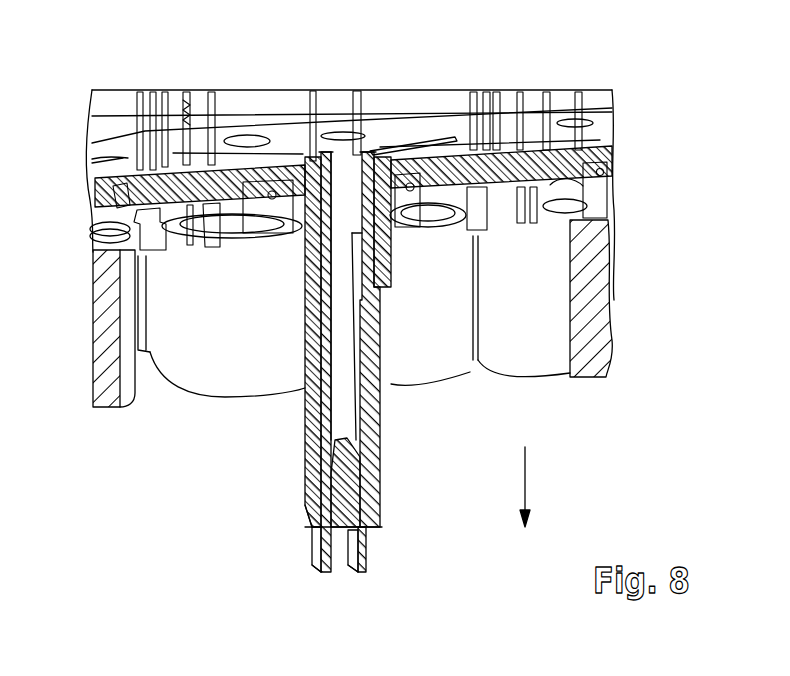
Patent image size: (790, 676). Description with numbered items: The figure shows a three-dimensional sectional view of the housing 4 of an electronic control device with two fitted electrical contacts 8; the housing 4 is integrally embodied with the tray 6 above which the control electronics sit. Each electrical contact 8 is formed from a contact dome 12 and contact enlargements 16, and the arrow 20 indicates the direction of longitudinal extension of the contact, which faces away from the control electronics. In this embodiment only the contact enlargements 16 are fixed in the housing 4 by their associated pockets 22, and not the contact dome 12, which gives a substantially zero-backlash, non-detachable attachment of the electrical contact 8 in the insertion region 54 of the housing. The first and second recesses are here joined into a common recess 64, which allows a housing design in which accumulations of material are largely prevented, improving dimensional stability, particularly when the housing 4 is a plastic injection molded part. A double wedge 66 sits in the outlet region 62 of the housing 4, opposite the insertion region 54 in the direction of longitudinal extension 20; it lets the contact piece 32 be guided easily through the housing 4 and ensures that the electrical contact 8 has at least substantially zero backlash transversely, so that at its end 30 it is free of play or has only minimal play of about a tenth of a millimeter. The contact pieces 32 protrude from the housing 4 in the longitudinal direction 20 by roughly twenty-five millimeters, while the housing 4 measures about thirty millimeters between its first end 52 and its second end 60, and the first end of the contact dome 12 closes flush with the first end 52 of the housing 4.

The housing 4 is at (377, 402).
The tray 6 is at (604, 150).
The electrical contact 8 is at (327, 586).
The contact dome 12 is at (357, 285).
The contact enlargement 16 is at (332, 160).
The arrow 20 is at (525, 480).
The pocket 22 is at (292, 163).
The end 30 is at (323, 571).
The contact piece 32 is at (363, 553).
The first end 52 is at (343, 160).
The insertion region 54 is at (383, 153).
The second end 60 is at (343, 541).
The outlet region 62 is at (302, 529).
The common recess 64 is at (342, 237).
The double wedge 66 is at (342, 493).